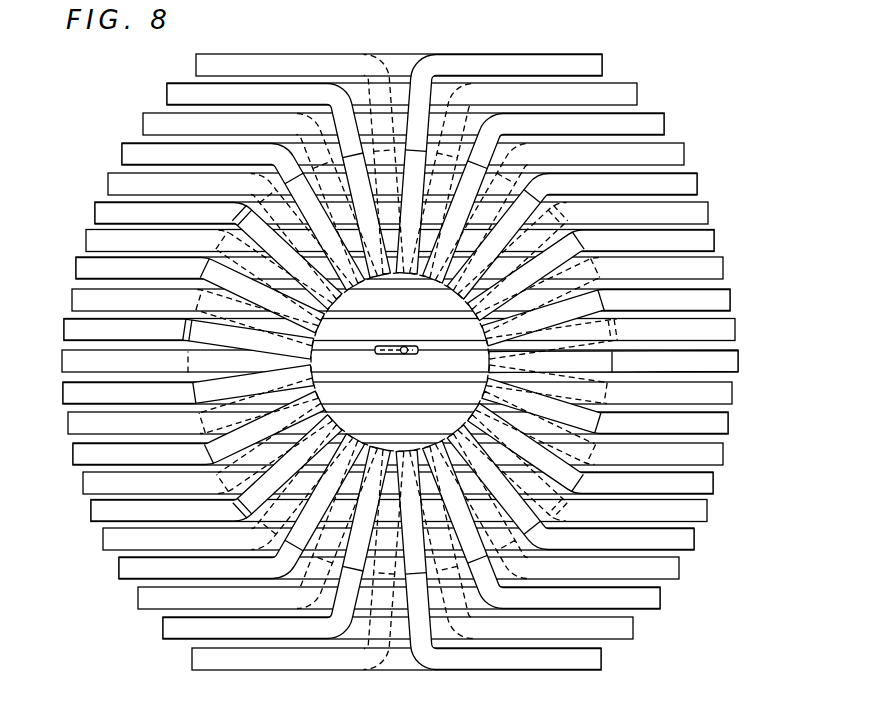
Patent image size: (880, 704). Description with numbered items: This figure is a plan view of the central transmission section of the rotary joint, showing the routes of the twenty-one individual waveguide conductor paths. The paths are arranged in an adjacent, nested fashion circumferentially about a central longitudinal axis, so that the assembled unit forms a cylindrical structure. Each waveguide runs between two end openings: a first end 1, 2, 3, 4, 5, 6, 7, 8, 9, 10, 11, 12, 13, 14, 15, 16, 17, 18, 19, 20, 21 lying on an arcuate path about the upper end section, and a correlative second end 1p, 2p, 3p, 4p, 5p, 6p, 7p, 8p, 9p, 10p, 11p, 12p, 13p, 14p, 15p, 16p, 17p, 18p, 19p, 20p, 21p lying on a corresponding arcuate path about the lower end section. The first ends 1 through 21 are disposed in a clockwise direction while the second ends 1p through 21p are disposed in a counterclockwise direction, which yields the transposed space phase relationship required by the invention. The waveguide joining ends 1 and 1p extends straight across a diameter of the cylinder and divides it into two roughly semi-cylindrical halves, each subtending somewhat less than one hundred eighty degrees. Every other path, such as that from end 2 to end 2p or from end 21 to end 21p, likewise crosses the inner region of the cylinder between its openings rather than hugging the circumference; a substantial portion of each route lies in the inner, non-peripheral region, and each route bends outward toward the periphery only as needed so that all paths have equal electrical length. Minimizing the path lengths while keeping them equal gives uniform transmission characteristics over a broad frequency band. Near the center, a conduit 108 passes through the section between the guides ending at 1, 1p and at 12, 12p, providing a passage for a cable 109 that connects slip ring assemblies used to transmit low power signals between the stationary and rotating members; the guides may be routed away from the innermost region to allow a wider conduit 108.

The waveguide conductor path end opening 1 is at (613, 362).
The waveguide conductor path end opening 2 is at (605, 405).
The waveguide conductor path end opening 3 is at (590, 449).
The waveguide conductor path end opening 4 is at (570, 487).
The waveguide conductor path end opening 5 is at (541, 525).
The waveguide conductor path end opening 6 is at (498, 560).
The waveguide conductor path end opening 7 is at (276, 542).
The waveguide conductor path end opening 8 is at (242, 506).
The waveguide conductor path end opening 9 is at (216, 468).
The waveguide conductor path end opening 10 is at (198, 427).
The waveguide conductor path end opening 11 is at (188, 384).
The waveguide conductor path end opening 12 is at (189, 339).
The waveguide conductor path end opening 13 is at (200, 295).
The waveguide conductor path end opening 14 is at (218, 255).
The waveguide conductor path end opening 15 is at (243, 217).
The waveguide conductor path end opening 16 is at (278, 181).
The waveguide conductor path end opening 17 is at (499, 164).
The waveguide conductor path end opening 18 is at (543, 199).
The waveguide conductor path end opening 19 is at (572, 236).
The waveguide conductor path end opening 20 is at (591, 275).
The waveguide conductor path end opening 21 is at (606, 317).
The correlative waveguide end opening 1p is at (249, 362).
The correlative waveguide end opening 2p is at (258, 405).
The correlative waveguide end opening 3p is at (275, 449).
The correlative waveguide end opening 4p is at (302, 487).
The correlative waveguide end opening 5p is at (337, 525).
The correlative waveguide end opening 6p is at (384, 560).
The correlative waveguide end opening 7p is at (441, 542).
The correlative waveguide end opening 8p is at (481, 506).
The correlative waveguide end opening 9p is at (512, 468).
The correlative waveguide end opening 10p is at (536, 427).
The correlative waveguide end opening 11p is at (546, 386).
The correlative waveguide end opening 12p is at (551, 339).
The correlative waveguide end opening 13p is at (538, 295).
The correlative waveguide end opening 14p is at (513, 255).
The correlative waveguide end opening 15p is at (481, 217).
The correlative waveguide end opening 16p is at (442, 181).
The correlative waveguide end opening 17p is at (384, 164).
The correlative waveguide end opening 18p is at (336, 199).
The correlative waveguide end opening 19p is at (302, 236).
The correlative waveguide end opening 20p is at (274, 275).
The correlative waveguide end opening 21p is at (257, 317).
The conduit 108 is at (421, 348).
The cable 109 is at (403, 347).